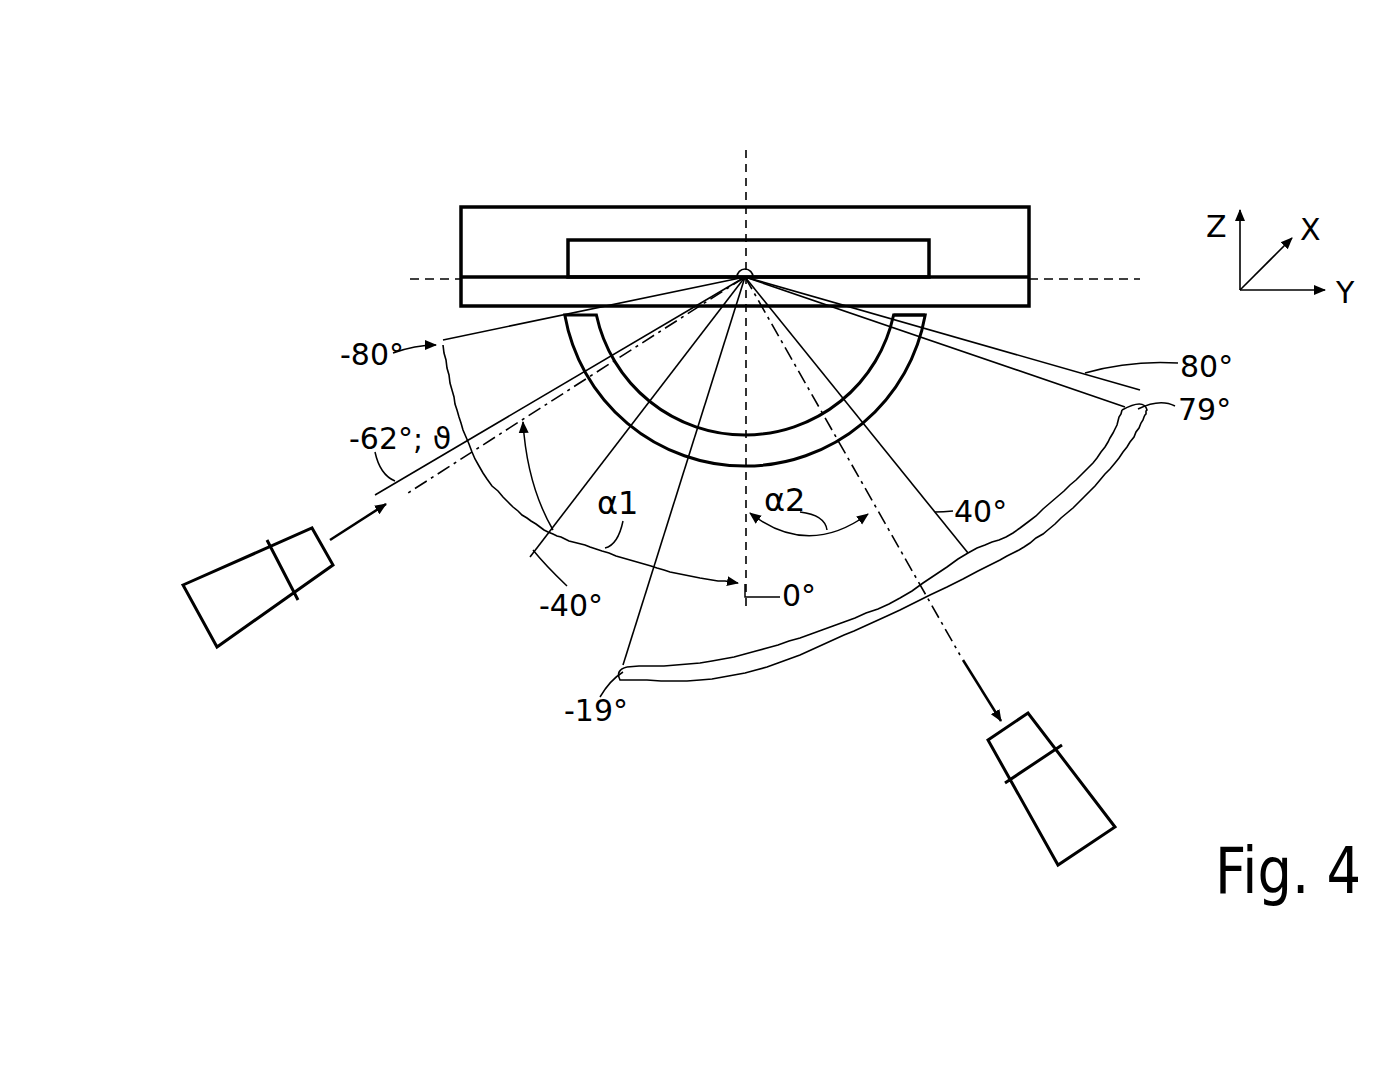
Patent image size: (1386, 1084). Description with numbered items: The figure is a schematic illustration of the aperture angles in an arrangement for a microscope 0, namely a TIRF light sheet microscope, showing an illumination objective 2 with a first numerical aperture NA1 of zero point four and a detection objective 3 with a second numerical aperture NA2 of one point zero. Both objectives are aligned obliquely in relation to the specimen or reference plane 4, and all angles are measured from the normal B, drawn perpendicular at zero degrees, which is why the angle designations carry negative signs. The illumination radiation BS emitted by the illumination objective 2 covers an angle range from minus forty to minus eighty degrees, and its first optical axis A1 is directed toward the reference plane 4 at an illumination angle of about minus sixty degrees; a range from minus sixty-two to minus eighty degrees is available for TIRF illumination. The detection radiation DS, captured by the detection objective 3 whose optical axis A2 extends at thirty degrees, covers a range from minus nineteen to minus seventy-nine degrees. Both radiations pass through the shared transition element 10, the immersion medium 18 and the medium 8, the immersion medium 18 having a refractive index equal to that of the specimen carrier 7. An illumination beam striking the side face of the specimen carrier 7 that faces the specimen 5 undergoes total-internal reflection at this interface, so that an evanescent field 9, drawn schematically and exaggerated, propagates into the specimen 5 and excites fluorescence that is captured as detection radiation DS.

The microscope 0 is at (1017, 134).
The illumination objective 2 is at (235, 555).
The detection objective 3 is at (1055, 740).
The reference plane 4 is at (1090, 279).
The specimen 5 is at (627, 252).
The specimen carrier 7 is at (1015, 300).
The medium 8 is at (481, 245).
The evanescent field 9 is at (748, 276).
The transition element 10 is at (920, 387).
The immersion medium 18 is at (887, 317).
The normal B is at (750, 160).
The illumination radiation BS is at (358, 520).
The detection radiation DS is at (980, 690).
The first optical axis A1 is at (576, 413).
The optical axis A2 is at (958, 657).
The first numerical aperture NA1 is at (448, 409).
The second numerical aperture NA2 is at (1004, 564).